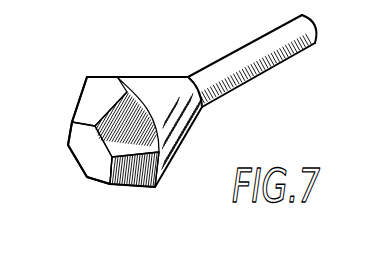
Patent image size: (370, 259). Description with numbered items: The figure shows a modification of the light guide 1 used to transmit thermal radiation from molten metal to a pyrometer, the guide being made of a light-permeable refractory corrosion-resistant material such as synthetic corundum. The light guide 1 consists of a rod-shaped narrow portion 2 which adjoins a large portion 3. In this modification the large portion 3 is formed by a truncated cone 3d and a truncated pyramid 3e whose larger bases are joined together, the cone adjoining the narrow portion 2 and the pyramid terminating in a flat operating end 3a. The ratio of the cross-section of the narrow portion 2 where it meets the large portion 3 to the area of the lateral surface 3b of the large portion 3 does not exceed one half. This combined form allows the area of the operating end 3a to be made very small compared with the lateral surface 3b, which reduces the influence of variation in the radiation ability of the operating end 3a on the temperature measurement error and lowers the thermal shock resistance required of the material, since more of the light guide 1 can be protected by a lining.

The light guide 1 is at (180, 74).
The narrow portion 2 is at (236, 51).
The large portion 3 is at (185, 125).
The operating end 3a is at (92, 168).
The lateral surface 3b is at (164, 172).
The truncated cone 3d is at (116, 76).
The truncated pyramid 3e is at (82, 88).